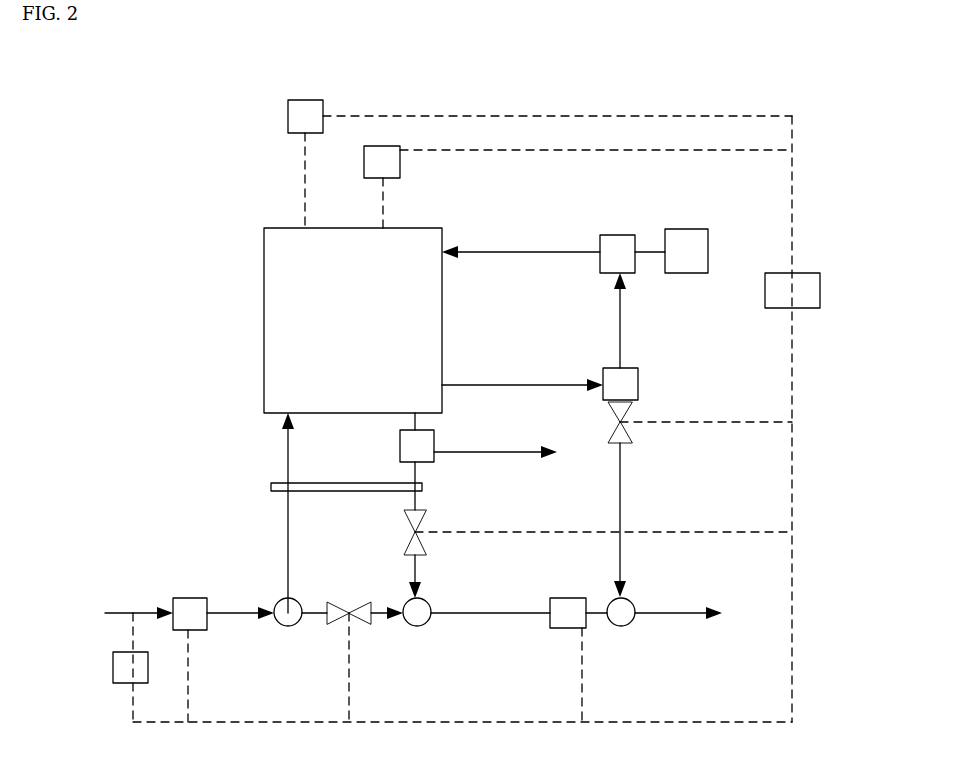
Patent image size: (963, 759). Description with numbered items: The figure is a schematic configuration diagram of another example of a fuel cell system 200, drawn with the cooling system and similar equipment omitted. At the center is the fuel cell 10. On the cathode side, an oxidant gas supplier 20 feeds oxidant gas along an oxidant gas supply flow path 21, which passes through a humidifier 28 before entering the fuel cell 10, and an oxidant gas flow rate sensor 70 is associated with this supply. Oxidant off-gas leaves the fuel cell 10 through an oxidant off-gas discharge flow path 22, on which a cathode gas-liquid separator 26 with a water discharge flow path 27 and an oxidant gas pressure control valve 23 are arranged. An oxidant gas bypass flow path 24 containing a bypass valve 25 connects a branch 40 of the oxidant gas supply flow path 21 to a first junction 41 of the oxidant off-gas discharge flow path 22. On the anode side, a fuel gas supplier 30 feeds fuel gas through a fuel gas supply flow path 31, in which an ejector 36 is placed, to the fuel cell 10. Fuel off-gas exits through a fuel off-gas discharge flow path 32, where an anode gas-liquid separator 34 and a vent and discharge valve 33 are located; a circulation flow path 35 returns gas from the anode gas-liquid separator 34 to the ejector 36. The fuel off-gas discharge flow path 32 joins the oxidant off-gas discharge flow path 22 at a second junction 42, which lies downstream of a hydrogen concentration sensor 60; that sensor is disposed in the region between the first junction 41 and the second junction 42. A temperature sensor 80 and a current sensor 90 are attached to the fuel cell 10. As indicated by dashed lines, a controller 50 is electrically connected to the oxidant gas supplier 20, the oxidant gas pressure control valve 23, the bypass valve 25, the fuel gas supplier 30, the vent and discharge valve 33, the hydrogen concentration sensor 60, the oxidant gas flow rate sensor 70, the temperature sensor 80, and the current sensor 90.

The fuel cell system 200 is at (806, 69).
The fuel cell 10 is at (265, 327).
The oxidant gas supplier 20 is at (185, 598).
The oxidant gas supply flow path 21 is at (287, 525).
The oxidant off-gas discharge flow path 22 is at (413, 474).
The oxidant gas pressure control valve 23 is at (425, 508).
The oxidant gas bypass flow path 24 is at (320, 616).
The bypass valve 25 is at (350, 614).
The cathode gas-liquid separator 26 is at (440, 432).
The water discharge flow path 27 is at (508, 455).
The humidifier 28 is at (326, 491).
The fuel gas supplier 30 is at (705, 229).
The fuel gas supply flow path 31 is at (530, 251).
The fuel off-gas discharge flow path 32 is at (540, 384).
The vent and discharge valve 33 is at (625, 433).
The anode gas-liquid separator 34 is at (640, 376).
The circulation flow path 35 is at (622, 300).
The ejector 36 is at (612, 235).
The branch 40 is at (290, 627).
The first junction 41 is at (428, 624).
The second junction 42 is at (635, 620).
The controller 50 is at (820, 290).
The hydrogen concentration sensor 60 is at (575, 628).
The oxidant gas flow rate sensor 70 is at (113, 665).
The temperature sensor 80 is at (288, 118).
The current sensor 90 is at (365, 182).